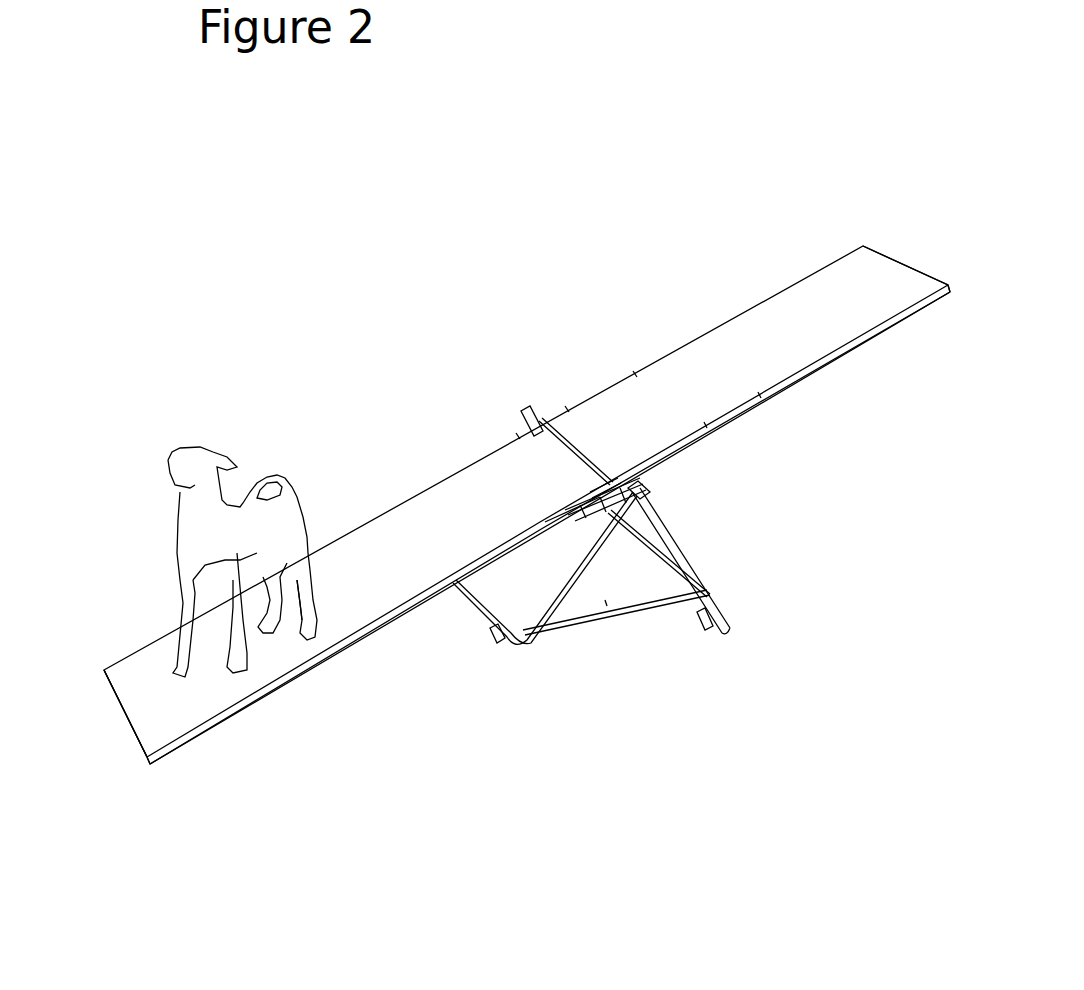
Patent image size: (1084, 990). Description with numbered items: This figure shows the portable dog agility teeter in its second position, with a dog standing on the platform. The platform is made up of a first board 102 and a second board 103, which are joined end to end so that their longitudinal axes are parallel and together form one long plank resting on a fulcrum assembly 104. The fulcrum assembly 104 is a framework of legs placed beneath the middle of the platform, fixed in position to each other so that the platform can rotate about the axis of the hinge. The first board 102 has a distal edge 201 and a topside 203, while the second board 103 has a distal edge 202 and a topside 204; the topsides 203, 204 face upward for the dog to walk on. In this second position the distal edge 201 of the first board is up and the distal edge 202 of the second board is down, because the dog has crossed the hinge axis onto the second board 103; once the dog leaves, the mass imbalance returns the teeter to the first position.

The first board 102 is at (709, 284).
The second board 103 is at (399, 486).
The fulcrum assembly 104 is at (702, 511).
The distal edge 201 is at (927, 240).
The distal edge 202 is at (105, 733).
The topside 203 is at (762, 387).
The topside 204 is at (297, 667).